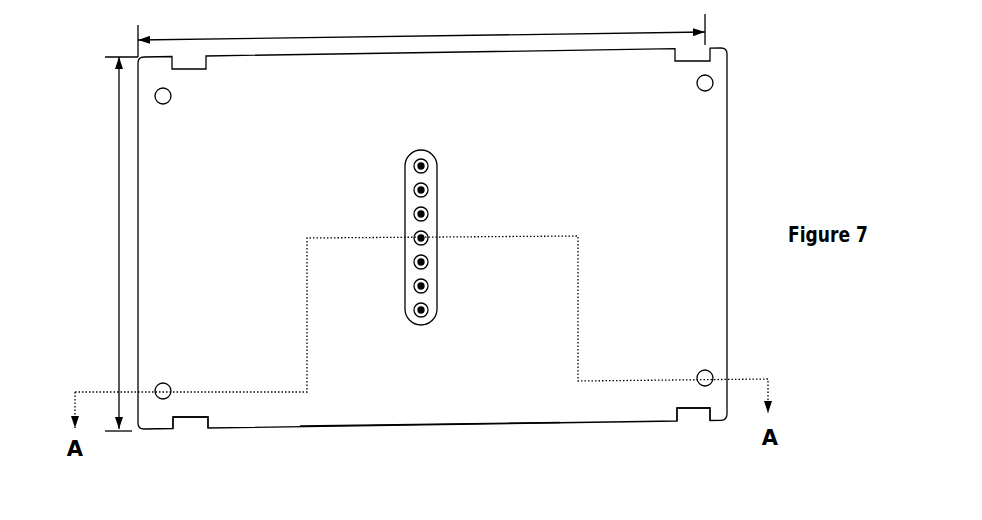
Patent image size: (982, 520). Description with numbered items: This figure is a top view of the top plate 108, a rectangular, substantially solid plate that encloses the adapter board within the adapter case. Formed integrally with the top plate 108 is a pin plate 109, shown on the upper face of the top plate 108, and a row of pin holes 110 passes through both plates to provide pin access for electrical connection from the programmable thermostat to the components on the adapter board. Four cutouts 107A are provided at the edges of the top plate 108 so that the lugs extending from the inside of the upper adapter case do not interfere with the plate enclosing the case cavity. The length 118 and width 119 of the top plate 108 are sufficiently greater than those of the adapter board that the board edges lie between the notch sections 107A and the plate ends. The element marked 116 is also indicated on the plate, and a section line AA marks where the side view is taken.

The cutouts 107A is at (186, 429).
The top plate 108 is at (752, 519).
The pin plate 109 is at (405, 188).
The pin holes 110 is at (423, 317).
The plate bottom edge 116 is at (513, 411).
The length 118 is at (421, 33).
The width 119 is at (106, 244).